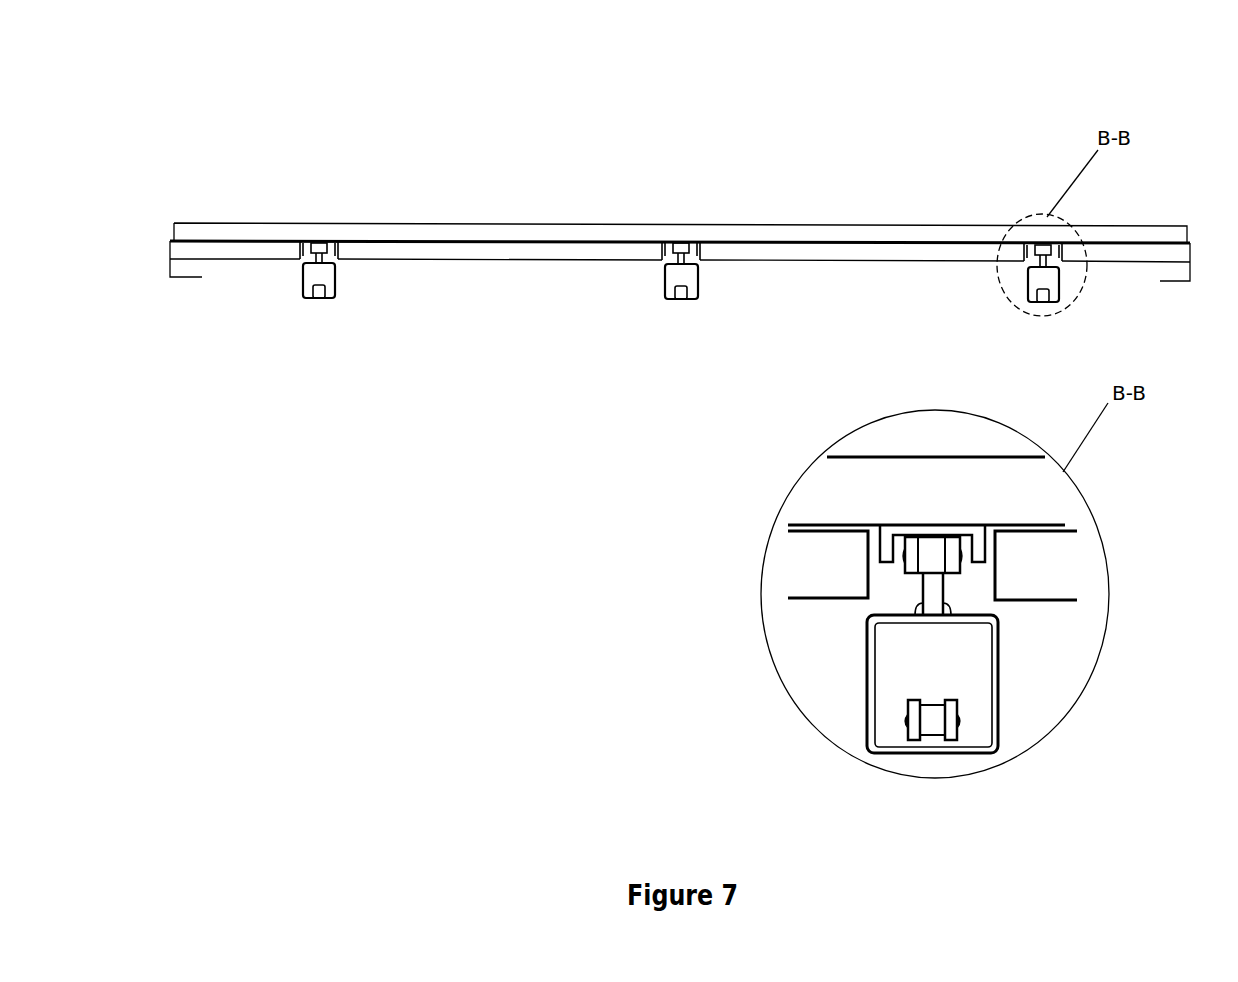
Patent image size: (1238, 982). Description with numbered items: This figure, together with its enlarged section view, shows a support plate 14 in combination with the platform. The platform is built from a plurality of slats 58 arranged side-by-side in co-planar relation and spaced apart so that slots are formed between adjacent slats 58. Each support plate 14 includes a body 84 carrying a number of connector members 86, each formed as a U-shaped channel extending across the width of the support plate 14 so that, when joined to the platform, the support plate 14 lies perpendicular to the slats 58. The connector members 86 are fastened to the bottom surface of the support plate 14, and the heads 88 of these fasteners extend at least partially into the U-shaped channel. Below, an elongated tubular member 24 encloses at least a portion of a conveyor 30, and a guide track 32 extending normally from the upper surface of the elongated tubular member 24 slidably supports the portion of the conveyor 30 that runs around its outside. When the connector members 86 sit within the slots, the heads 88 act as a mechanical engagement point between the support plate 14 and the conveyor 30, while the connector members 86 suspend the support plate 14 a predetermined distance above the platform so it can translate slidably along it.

The support plate 14 is at (680, 130).
The slat 58 is at (680, 333).
The body 84 is at (908, 472).
The connector member 86 is at (813, 570).
The head of fastener 88 is at (818, 638).
The guide track 32 is at (1000, 583).
The elongated tubular member 24 is at (1016, 696).
The conveyor 30 is at (886, 773).